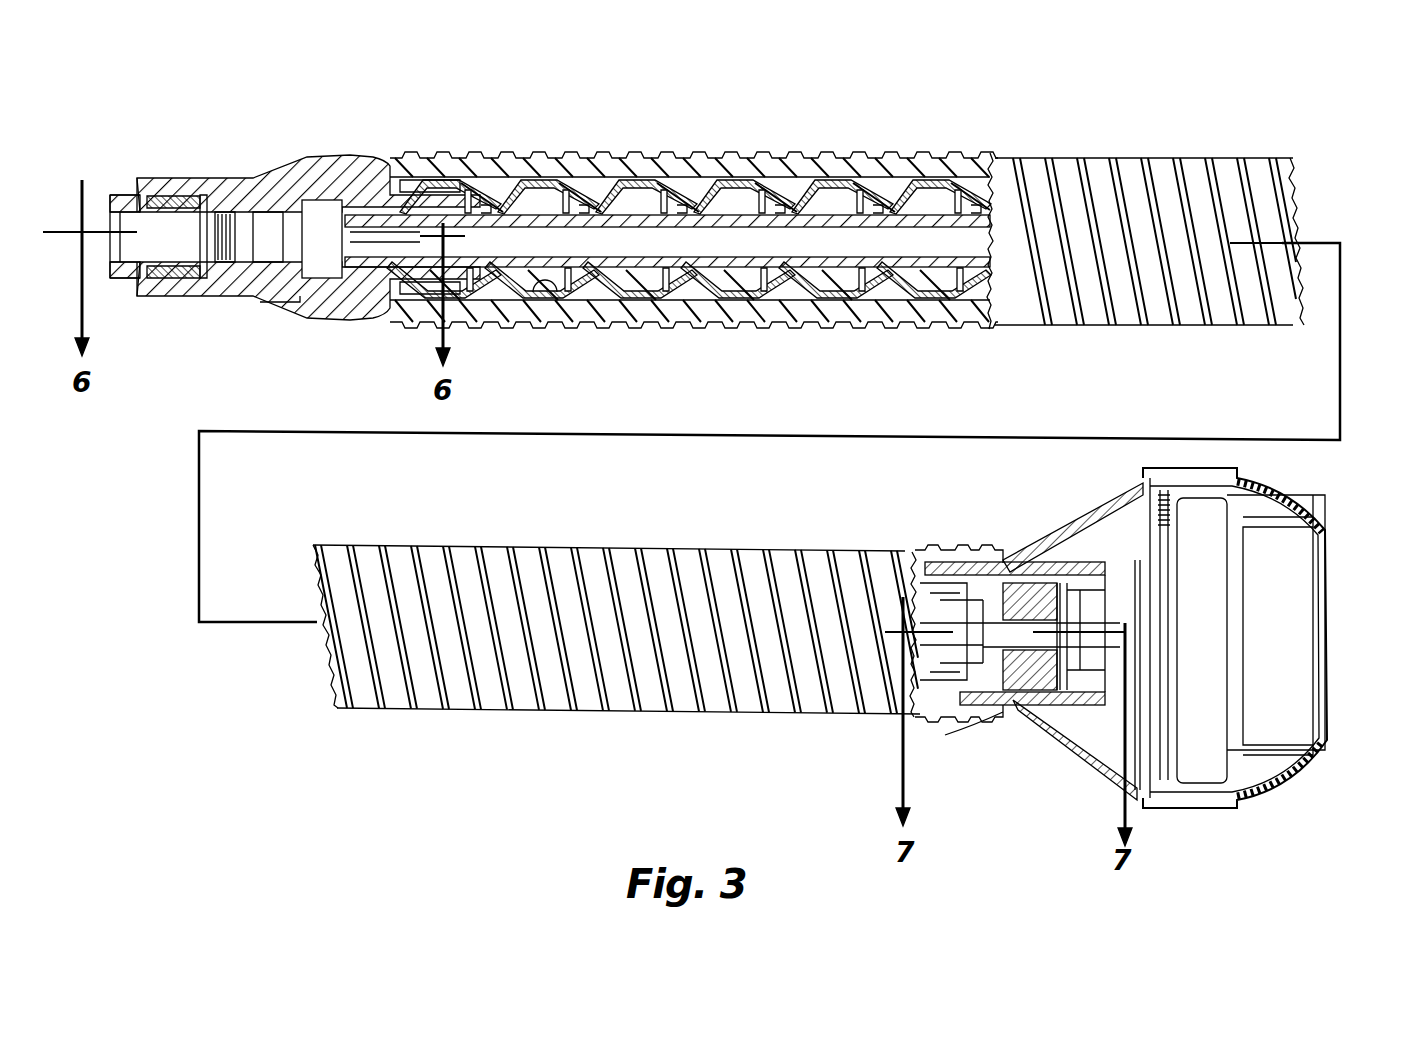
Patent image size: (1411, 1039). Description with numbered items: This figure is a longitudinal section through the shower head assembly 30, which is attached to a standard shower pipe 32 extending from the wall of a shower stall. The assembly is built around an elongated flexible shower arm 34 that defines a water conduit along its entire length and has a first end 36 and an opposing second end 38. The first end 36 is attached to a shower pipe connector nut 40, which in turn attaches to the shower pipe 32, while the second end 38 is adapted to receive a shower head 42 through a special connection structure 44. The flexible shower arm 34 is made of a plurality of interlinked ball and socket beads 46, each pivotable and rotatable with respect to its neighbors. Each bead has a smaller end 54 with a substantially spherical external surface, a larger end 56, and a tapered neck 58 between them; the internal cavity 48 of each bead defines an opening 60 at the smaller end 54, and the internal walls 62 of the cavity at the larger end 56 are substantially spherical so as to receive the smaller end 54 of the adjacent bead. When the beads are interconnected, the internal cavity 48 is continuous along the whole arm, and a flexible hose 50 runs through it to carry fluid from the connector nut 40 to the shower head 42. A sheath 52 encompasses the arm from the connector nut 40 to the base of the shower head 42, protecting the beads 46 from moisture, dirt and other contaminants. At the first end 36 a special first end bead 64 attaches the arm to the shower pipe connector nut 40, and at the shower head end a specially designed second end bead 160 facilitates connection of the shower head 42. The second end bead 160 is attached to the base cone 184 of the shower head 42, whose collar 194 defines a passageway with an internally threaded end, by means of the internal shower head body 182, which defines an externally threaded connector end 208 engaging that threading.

The shower head assembly 30 is at (882, 140).
The shower pipe 32 is at (127, 192).
The flexible shower arm 34 is at (1132, 160).
The first end 36 is at (412, 155).
The second end 38 is at (910, 548).
The shower pipe connector nut 40 is at (340, 152).
The shower head 42 is at (1302, 515).
The connection structure 44 is at (1020, 580).
The ball and socket beads 46 is at (820, 180).
The internal cavity 48 is at (625, 176).
The flexible hose 50 is at (525, 215).
The sheath 52 is at (1036, 160).
The smaller end 54 is at (925, 300).
The larger end 56 is at (850, 303).
The tapered neck 58 is at (735, 302).
The opening 60 is at (528, 300).
The internal walls 62 is at (660, 305).
The first end bead 64 is at (293, 305).
The second end bead 160 is at (980, 717).
The internal shower head body 182 is at (1153, 573).
The base cone 184 is at (1060, 745).
The collar 194 is at (1088, 560).
The externally threaded connector end 208 is at (1093, 757).